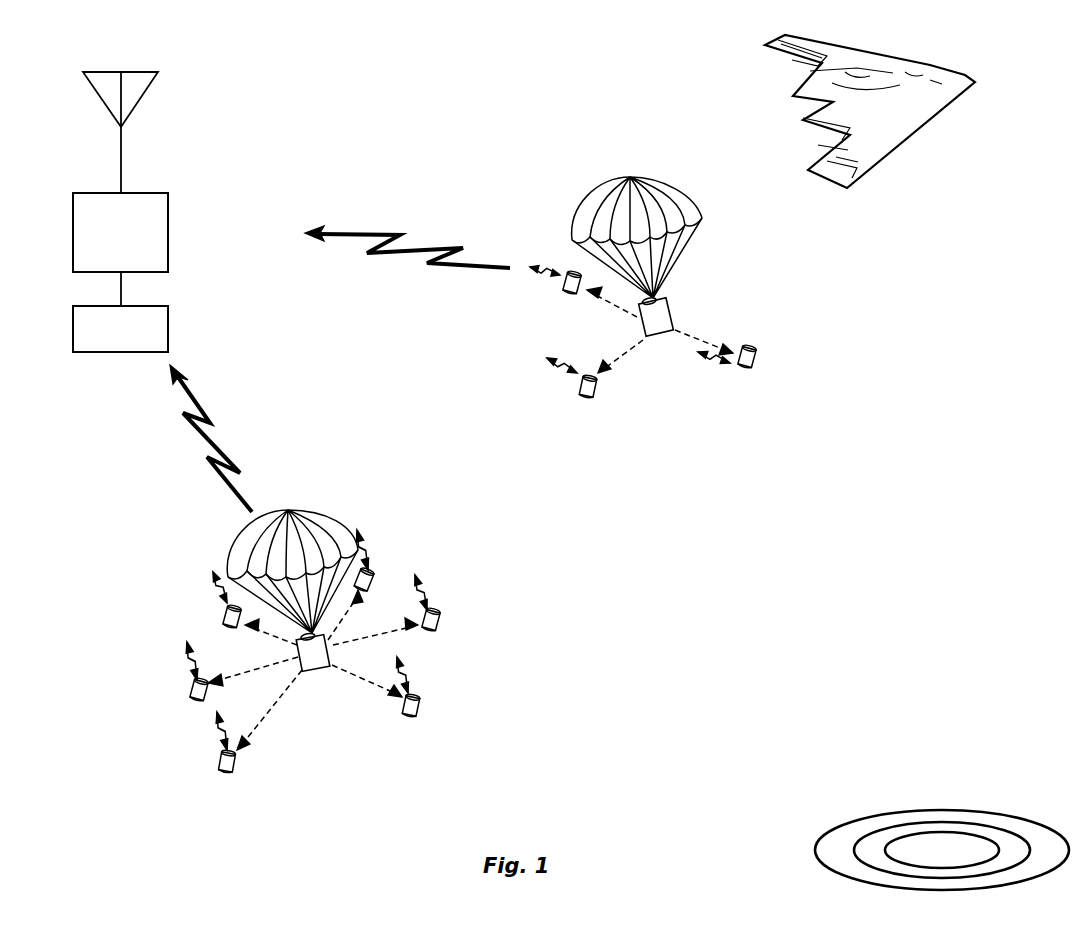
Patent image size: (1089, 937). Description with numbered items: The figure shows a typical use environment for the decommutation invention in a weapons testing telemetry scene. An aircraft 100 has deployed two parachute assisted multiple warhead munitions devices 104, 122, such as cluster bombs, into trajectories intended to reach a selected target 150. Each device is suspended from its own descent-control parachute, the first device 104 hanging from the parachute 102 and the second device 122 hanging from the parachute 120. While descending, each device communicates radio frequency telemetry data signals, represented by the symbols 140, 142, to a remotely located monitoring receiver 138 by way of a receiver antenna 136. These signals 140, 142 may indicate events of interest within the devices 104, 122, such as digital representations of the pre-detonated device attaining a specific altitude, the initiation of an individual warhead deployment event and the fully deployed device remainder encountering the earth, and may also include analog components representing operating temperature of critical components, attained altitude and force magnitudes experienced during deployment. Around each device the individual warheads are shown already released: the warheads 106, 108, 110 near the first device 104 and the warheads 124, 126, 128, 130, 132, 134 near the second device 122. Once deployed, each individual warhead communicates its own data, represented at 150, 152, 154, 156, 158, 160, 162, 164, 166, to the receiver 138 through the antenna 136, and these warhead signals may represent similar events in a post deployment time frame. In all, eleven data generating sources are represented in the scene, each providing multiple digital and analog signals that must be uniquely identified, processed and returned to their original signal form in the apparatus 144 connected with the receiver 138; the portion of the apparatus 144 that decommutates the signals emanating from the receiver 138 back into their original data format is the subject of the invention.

The aircraft 100 is at (933, 65).
The descent-control parachute 102 is at (630, 177).
The parachute assisted multiple warhead munitions device 104 is at (668, 337).
The individual warhead 106 is at (757, 353).
The individual warhead 108 is at (590, 400).
The individual warhead 110 is at (563, 283).
The descent-control parachute 120 is at (323, 512).
The parachute assisted multiple warhead munitions device 122 is at (318, 670).
The individual warhead 124 is at (370, 582).
The individual warhead 126 is at (440, 622).
The individual warhead 128 is at (420, 705).
The individual warhead 130 is at (237, 760).
The individual warhead 132 is at (192, 692).
The individual warhead 134 is at (223, 617).
The receiver antenna 136 is at (132, 70).
The monitoring receiver 138 is at (168, 211).
The radio frequency telemetry data signal 140 is at (215, 438).
The radio frequency telemetry data signal 142 is at (407, 247).
The apparatus 144 is at (168, 313).
The selected target 150 is at (218, 730).
The individual warhead data signal 152 is at (188, 657).
The individual warhead data signal 154 is at (213, 585).
The individual warhead data signal 156 is at (405, 672).
The individual warhead data signal 158 is at (423, 587).
The individual warhead data signal 160 is at (363, 543).
The individual warhead data signal 162 is at (563, 370).
The individual warhead data signal 164 is at (713, 362).
The individual warhead data signal 166 is at (558, 272).